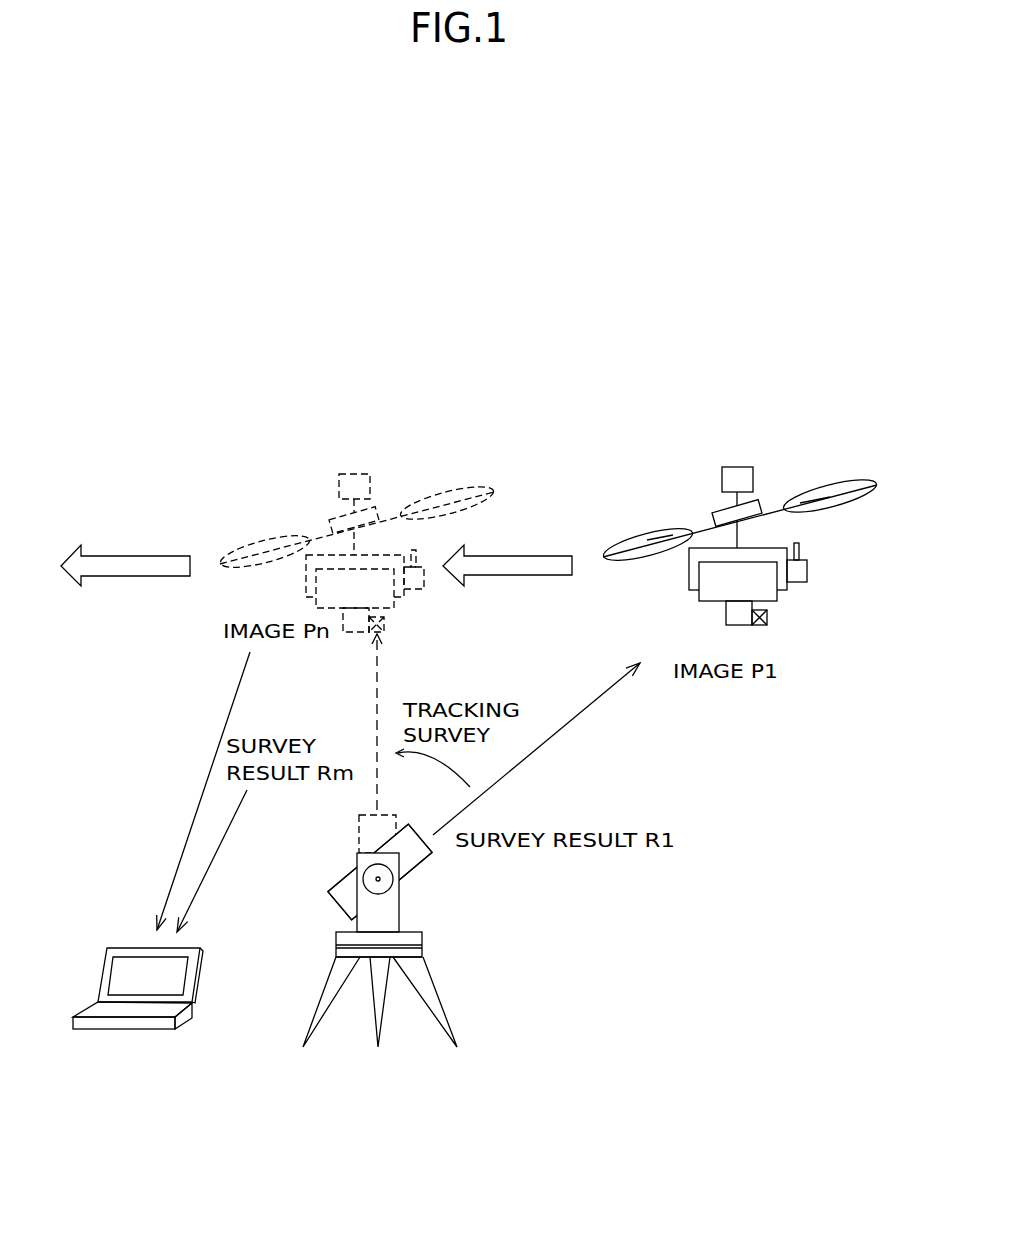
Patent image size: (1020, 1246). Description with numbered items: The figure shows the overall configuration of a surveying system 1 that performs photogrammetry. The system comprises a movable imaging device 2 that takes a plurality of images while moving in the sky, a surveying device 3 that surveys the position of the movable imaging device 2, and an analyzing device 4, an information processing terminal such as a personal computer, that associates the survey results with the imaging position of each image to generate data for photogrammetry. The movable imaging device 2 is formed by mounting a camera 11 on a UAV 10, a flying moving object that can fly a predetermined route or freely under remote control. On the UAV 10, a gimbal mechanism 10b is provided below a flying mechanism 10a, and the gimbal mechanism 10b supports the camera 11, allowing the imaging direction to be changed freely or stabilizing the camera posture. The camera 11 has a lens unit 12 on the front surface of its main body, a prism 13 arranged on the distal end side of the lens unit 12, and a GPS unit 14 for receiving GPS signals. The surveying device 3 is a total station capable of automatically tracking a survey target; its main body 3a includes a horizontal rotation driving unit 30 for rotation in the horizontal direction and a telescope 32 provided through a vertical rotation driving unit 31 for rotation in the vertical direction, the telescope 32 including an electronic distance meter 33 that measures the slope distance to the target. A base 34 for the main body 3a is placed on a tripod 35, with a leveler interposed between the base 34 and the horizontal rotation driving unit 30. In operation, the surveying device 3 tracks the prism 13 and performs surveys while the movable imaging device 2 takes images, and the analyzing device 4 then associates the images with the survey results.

The surveying system 1 is at (582, 322).
The movable imaging device 2 is at (740, 518).
The surveying device 3 is at (386, 920).
The main body 3a is at (355, 858).
The analyzing device 4 is at (123, 910).
The UAV 10 is at (772, 497).
The flying mechanism 10a is at (714, 512).
The gimbal mechanism 10b is at (690, 563).
The camera 11 is at (778, 600).
The lens unit 12 is at (725, 617).
The prism 13 is at (757, 627).
The GPS unit 14 is at (807, 570).
The horizontal rotation driving unit 30 is at (405, 930).
The vertical rotation driving unit 31 is at (358, 887).
The telescope 32 is at (403, 867).
The electronic distance meter 33 is at (380, 872).
The base 34 is at (336, 953).
The tripod 35 is at (332, 980).